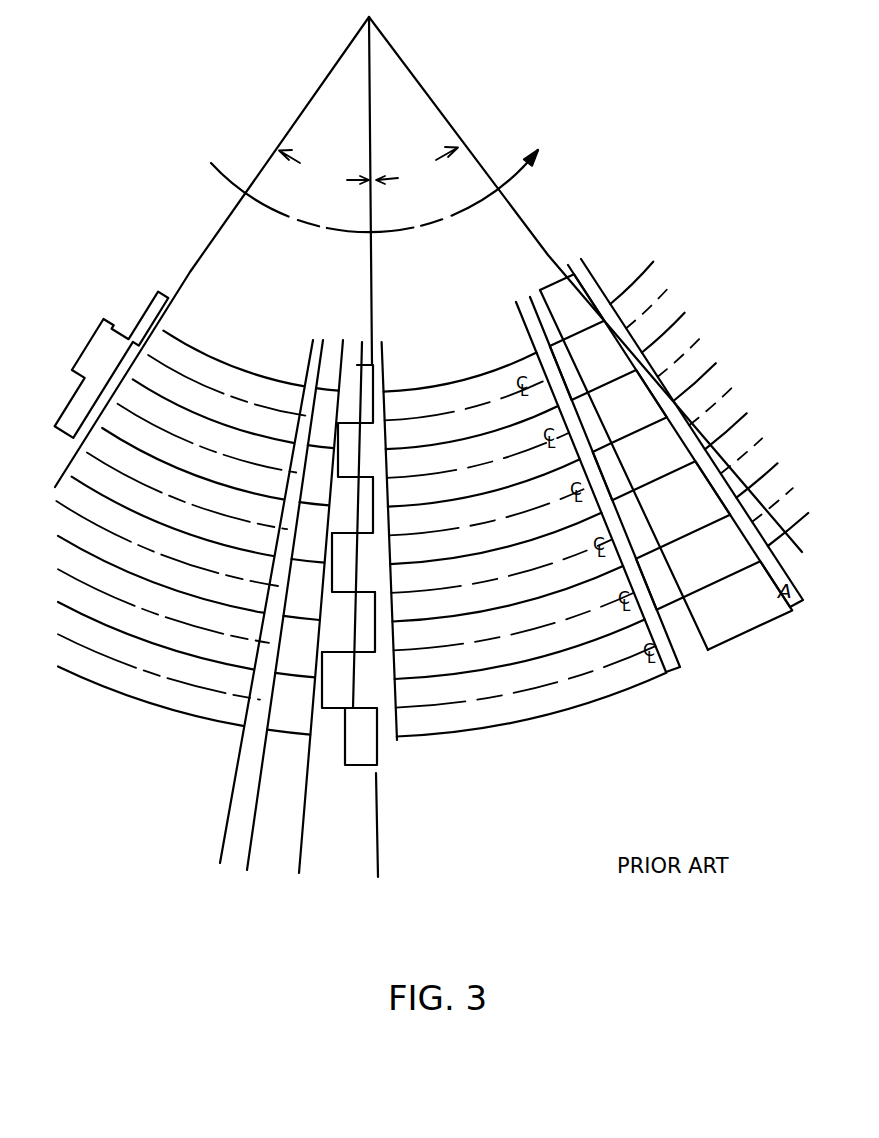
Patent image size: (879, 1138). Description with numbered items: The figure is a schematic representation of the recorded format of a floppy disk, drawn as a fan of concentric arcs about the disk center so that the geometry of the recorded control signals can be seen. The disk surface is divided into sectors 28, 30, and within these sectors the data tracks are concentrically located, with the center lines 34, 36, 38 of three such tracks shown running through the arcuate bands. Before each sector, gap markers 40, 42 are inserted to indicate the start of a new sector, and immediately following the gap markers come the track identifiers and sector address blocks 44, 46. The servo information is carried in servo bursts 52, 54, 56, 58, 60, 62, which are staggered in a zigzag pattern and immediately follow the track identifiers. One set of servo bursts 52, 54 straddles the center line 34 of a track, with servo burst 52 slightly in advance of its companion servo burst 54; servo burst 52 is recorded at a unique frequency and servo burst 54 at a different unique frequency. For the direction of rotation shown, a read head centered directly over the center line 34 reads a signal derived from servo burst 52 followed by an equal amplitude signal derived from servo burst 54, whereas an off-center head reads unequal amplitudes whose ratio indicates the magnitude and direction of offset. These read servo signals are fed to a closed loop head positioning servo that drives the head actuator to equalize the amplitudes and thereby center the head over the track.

The sector 28 is at (320, 132).
The sector 30 is at (428, 132).
The center line of data track 34 is at (500, 388).
The center line of data track 36 is at (520, 440).
The center line of data track 38 is at (520, 497).
The gap marker 40 is at (318, 365).
The gap marker 42 is at (516, 302).
The track identifier and sector address block 44 is at (322, 433).
The track identifier and sector address block 46 is at (322, 490).
The servo burst 52 is at (358, 365).
The servo burst 54 is at (350, 457).
The servo burst 56 is at (358, 512).
The servo burst 58 is at (345, 566).
The servo burst 60 is at (363, 627).
The servo burst 62 is at (335, 682).